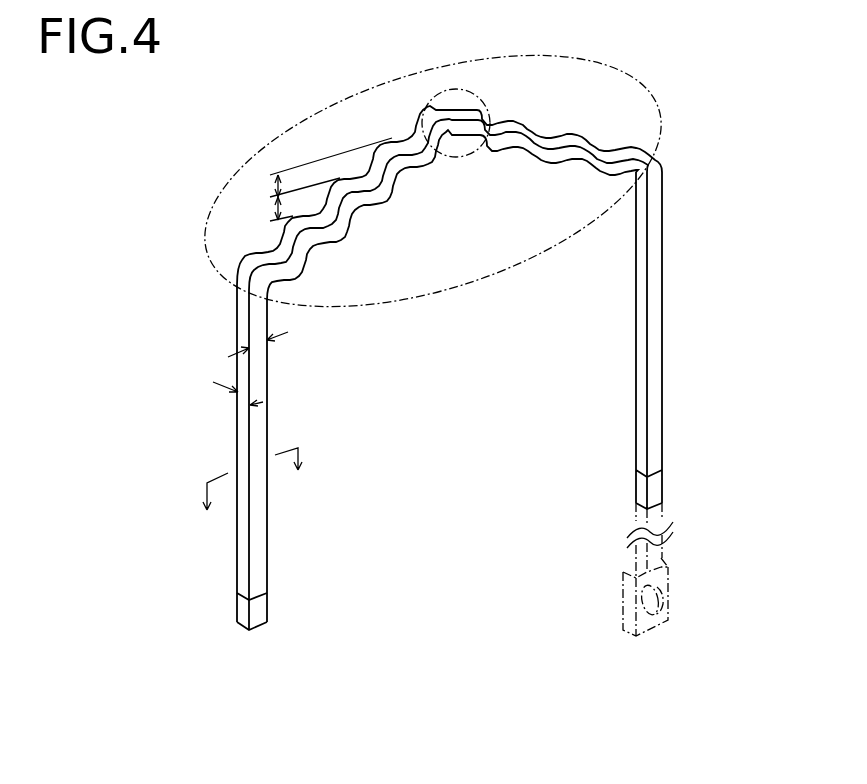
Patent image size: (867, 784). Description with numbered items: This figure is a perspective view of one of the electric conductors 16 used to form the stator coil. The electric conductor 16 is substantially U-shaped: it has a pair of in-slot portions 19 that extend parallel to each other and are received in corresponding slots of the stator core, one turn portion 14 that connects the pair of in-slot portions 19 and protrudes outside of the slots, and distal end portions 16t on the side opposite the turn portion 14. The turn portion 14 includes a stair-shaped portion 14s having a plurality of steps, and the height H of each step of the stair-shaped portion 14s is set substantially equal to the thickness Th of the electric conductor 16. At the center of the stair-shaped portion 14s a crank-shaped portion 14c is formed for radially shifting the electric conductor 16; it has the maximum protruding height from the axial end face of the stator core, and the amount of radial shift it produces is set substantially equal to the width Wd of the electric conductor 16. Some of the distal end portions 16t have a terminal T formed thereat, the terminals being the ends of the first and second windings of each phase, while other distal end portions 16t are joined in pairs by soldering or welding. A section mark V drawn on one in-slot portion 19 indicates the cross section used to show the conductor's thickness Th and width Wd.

The electric conductor 16 is at (290, 118).
The turn portion 14 is at (680, 88).
The crank-shaped portion 14c is at (464, 158).
The stair-shaped portion 14s is at (385, 305).
The in-slot portion 19 is at (680, 188).
The distal end portion 16t is at (680, 452).
The terminal T is at (623, 600).
The height of each step H is at (322, 181).
The thickness of the electric conductors Th is at (268, 346).
The width of the electric conductors Wd is at (237, 407).
The section line V- V is at (255, 499).